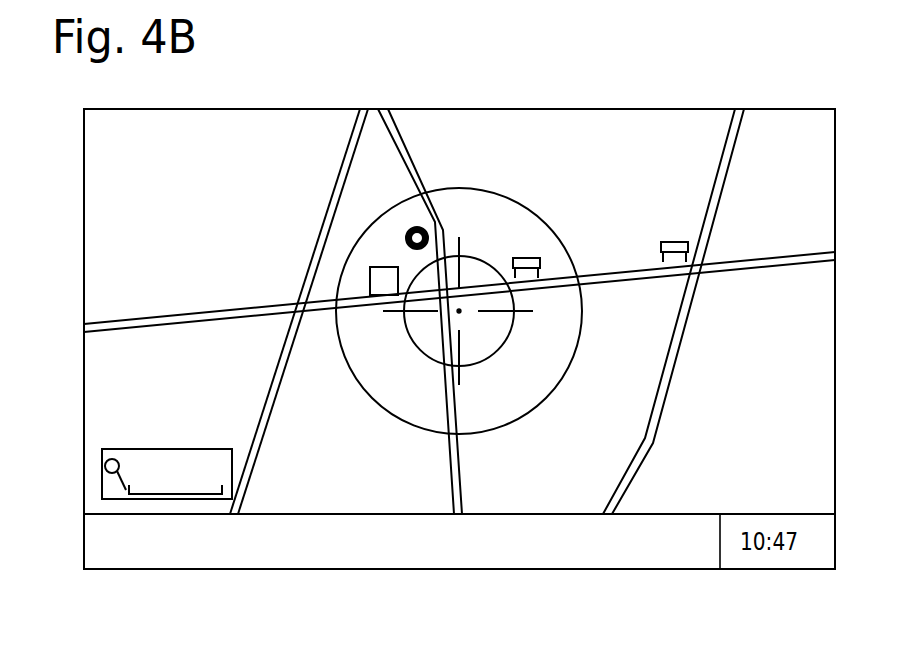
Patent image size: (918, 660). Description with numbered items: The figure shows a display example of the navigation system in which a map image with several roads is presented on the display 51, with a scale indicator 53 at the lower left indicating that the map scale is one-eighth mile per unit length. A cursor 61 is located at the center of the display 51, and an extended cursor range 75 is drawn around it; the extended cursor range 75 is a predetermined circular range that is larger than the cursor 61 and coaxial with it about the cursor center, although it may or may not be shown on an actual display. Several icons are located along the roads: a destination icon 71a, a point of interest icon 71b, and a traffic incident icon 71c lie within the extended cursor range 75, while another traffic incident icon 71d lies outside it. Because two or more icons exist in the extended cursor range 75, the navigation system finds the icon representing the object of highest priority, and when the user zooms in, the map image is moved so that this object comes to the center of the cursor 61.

The display 51 is at (610, 108).
The scale indicator 53 is at (102, 472).
The cursor 61 is at (490, 360).
The extended cursor range 75 is at (490, 189).
The destination icon 71a is at (410, 227).
The point of interest icon 71b is at (363, 253).
The traffic incident icon 71c is at (513, 258).
The traffic incident icon 71d is at (668, 242).